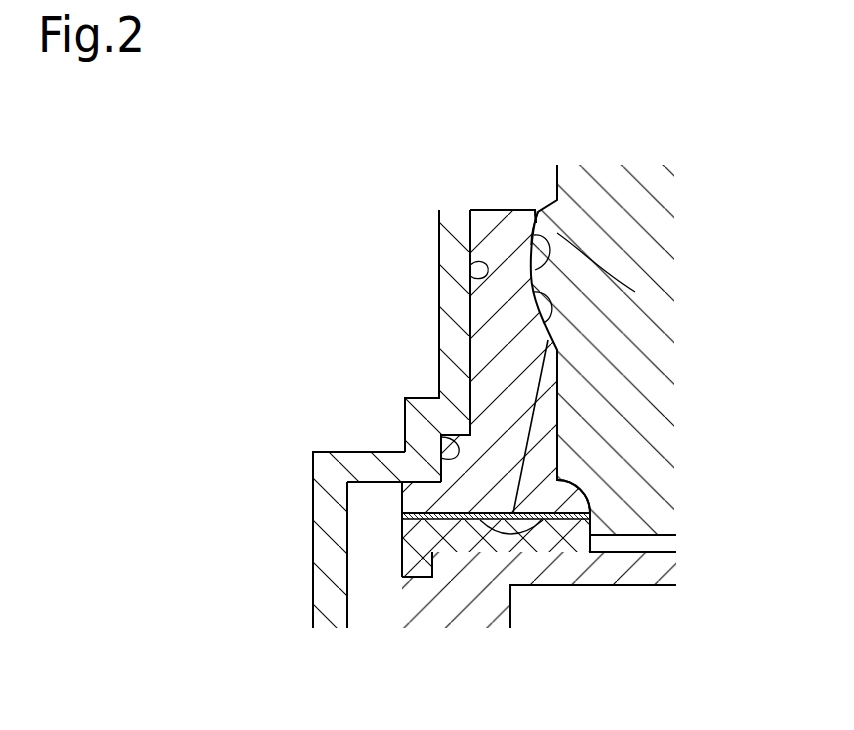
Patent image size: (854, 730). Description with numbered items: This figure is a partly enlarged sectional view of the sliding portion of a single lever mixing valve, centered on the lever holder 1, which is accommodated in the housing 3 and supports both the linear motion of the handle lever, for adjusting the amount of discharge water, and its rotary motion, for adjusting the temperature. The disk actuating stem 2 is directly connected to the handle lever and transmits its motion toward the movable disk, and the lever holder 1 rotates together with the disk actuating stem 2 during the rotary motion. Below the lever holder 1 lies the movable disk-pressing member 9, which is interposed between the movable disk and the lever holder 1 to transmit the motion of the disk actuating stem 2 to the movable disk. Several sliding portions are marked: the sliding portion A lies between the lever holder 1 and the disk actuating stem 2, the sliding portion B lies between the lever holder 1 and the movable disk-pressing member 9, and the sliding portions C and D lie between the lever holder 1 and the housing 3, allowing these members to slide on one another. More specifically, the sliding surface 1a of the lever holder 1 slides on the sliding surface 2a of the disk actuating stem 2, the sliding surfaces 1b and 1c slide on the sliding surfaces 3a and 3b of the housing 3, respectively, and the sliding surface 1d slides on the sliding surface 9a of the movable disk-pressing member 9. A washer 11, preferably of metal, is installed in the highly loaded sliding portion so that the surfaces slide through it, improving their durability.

The lever holder 1 is at (517, 222).
The sliding surface 1a is at (532, 330).
The sliding surface 1b is at (465, 215).
The sliding surface 1c is at (465, 430).
The sliding surface 1d is at (560, 508).
The disk actuating stem 2 is at (604, 216).
The sliding surface 2a is at (563, 228).
The housing 3 is at (447, 260).
The sliding surface 3a is at (450, 280).
The sliding surface 3b is at (441, 458).
The movable disk-pressing member 9 is at (420, 533).
The sliding surface 9a is at (493, 503).
The washer 11 is at (400, 512).
The sliding portion A is at (548, 228).
The sliding portion B is at (407, 505).
The sliding portion C is at (552, 348).
The sliding portion D is at (470, 265).